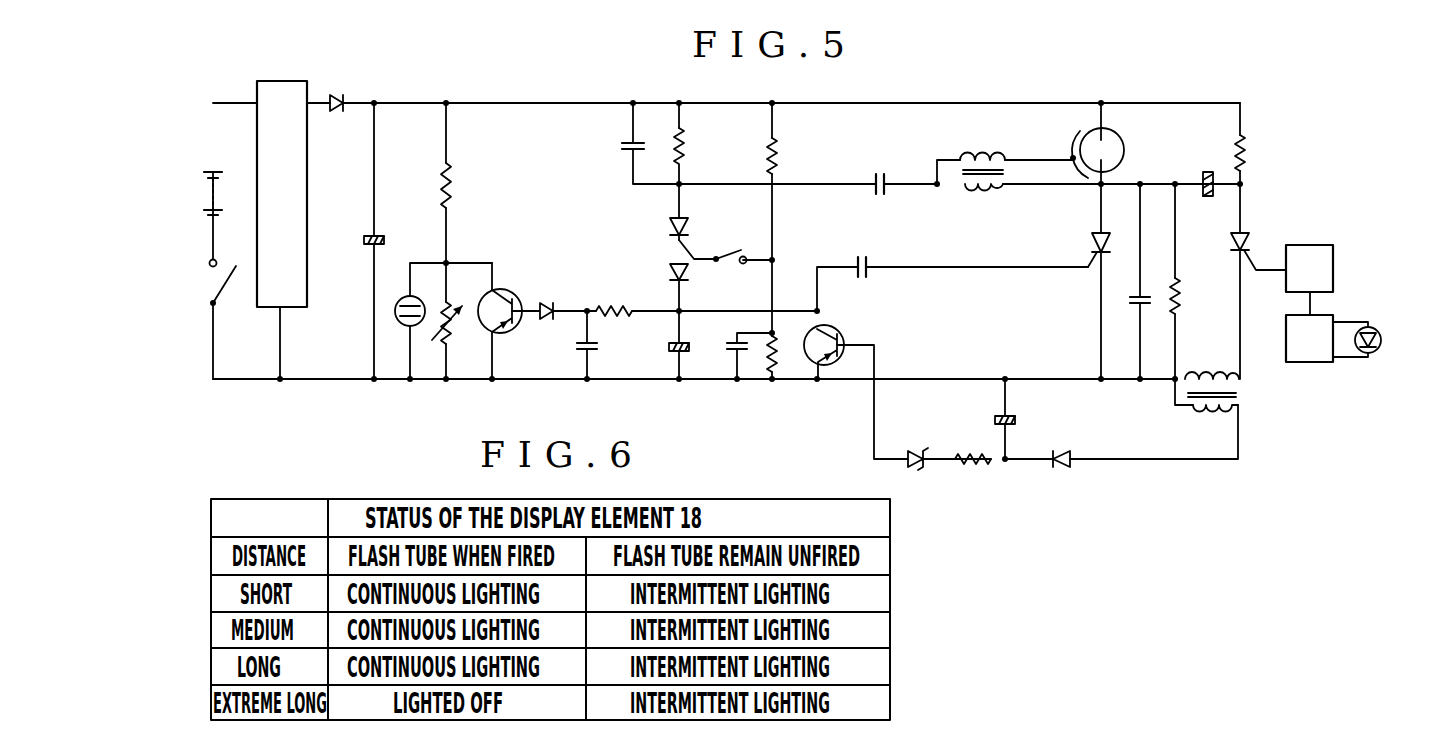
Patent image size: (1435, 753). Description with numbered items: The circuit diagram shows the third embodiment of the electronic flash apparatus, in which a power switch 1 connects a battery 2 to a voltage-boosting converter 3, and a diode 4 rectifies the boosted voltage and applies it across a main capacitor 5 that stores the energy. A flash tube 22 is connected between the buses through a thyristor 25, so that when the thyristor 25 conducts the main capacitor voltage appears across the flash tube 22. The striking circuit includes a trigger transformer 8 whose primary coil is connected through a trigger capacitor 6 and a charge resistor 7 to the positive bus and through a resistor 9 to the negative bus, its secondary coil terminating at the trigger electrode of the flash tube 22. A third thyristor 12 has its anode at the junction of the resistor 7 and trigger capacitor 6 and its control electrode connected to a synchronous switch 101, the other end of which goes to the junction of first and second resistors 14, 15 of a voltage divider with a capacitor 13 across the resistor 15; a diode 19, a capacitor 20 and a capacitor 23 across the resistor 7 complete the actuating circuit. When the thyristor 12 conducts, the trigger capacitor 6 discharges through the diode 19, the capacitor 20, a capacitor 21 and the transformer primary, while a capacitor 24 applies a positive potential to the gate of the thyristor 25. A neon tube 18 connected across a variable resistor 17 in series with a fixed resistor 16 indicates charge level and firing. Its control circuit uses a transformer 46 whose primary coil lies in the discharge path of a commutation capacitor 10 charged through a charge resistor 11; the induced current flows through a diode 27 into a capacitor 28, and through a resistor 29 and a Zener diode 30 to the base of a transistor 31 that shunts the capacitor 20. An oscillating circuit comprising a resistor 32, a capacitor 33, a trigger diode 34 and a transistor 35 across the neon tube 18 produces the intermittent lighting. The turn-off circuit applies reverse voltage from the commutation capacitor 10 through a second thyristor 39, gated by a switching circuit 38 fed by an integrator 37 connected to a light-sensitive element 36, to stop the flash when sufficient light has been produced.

The power switch 1 is at (223, 286).
The battery 2 is at (220, 193).
The voltage-boosting converter 3 is at (287, 207).
The diode 4 is at (335, 87).
The main capacitor 5 is at (366, 247).
The trigger capacitor 6 is at (880, 169).
The charge resistor 7 is at (686, 147).
The trigger transformer 8 is at (982, 187).
The resistor 9 is at (1180, 296).
The commutation capacitor 10 is at (1208, 199).
The charge resistor 11 is at (1250, 153).
The third thyristor 12 is at (668, 228).
The capacitor 13 is at (728, 357).
The first resistor 14 is at (782, 156).
The second resistor 15 is at (779, 360).
The fixed resistor 16 is at (456, 185).
The variable resistor 17 is at (451, 324).
The neon tube 18 is at (404, 323).
The diode 19 is at (668, 272).
The capacitor 20 is at (668, 350).
The capacitor 21 is at (1130, 300).
The flash tube 22 is at (1109, 153).
The capacitor 23 is at (622, 147).
The capacitor 24 is at (862, 252).
The thyristor 25 is at (1089, 247).
The diode 27 is at (1065, 443).
The capacitor 28 is at (1016, 420).
The resistor 29 is at (973, 444).
The Zener diode 30 is at (912, 445).
The transistor 31 is at (829, 339).
The resistor 32 is at (614, 296).
The capacitor 33 is at (598, 350).
The trigger diode 34 is at (535, 329).
The transistor 35 is at (500, 318).
The light-sensitive element 36 is at (1370, 355).
The integrator 37 is at (1323, 352).
The switching circuit 38 is at (1323, 282).
The second thyristor 39 is at (1258, 249).
The transformer 46 is at (1240, 398).
The synchronous switch 101 is at (745, 254).